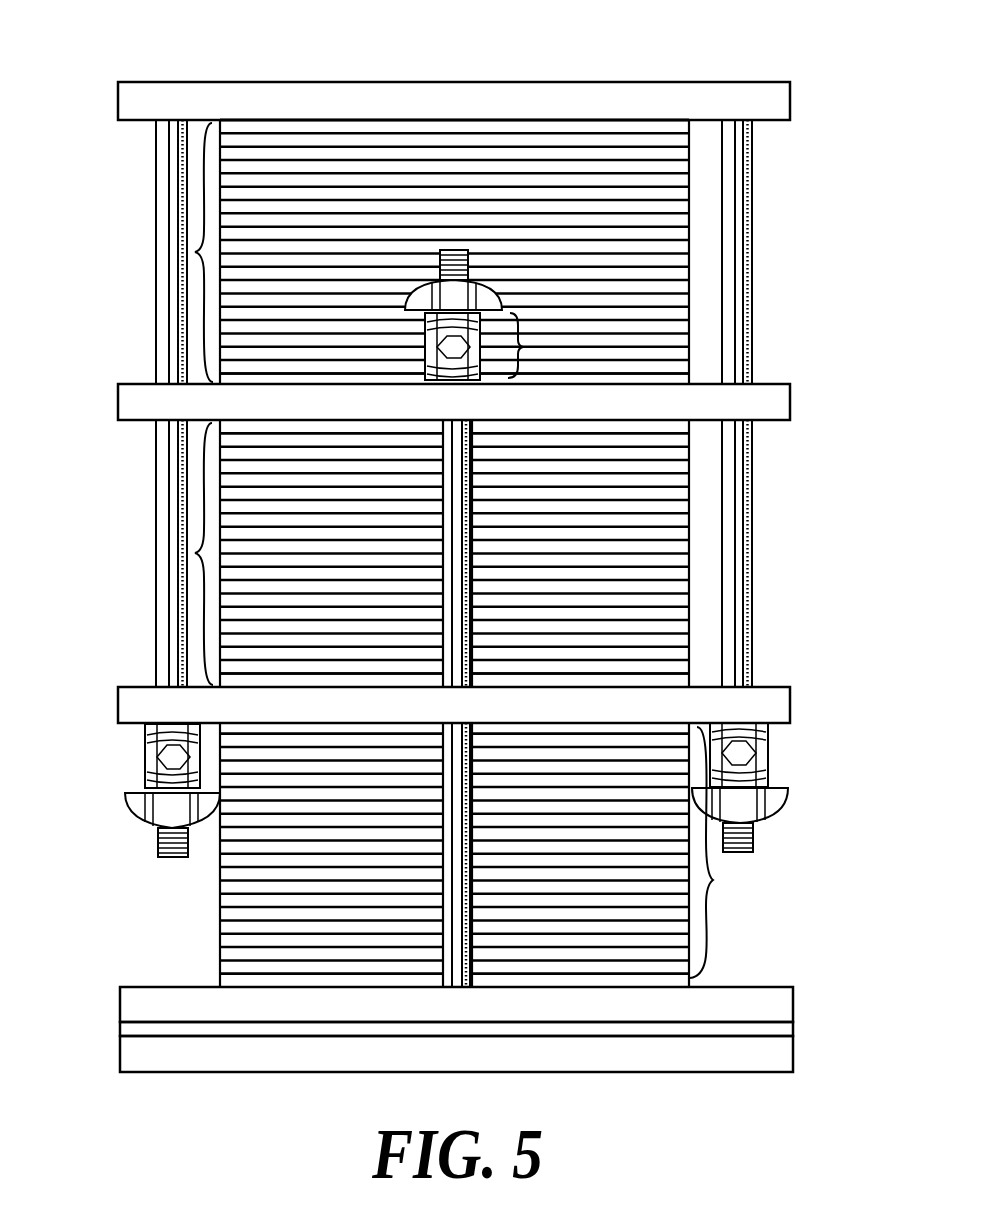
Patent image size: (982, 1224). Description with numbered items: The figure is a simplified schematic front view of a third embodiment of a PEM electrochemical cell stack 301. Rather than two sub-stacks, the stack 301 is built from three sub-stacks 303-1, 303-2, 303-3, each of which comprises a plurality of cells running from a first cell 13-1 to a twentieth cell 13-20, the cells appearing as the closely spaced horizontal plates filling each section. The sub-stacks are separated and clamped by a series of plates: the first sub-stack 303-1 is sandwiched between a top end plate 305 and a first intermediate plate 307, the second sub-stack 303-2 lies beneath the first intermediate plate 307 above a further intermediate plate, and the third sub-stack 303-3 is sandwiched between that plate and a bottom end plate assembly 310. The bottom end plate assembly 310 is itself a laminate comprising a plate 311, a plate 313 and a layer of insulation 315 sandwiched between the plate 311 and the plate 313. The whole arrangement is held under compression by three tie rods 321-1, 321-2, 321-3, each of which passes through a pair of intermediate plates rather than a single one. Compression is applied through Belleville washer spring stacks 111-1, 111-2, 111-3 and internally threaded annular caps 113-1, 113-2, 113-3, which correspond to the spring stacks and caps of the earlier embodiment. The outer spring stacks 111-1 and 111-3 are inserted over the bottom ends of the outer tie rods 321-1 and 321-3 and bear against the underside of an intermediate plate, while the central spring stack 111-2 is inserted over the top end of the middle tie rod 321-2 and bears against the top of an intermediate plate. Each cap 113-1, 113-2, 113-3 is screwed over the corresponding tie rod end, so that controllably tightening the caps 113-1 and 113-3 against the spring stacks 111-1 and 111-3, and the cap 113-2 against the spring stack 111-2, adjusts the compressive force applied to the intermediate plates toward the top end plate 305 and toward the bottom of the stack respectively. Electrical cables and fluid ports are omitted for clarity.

The PEM electrochemical cell stack 301 is at (176, 46).
The top end plate 305 is at (505, 95).
The first intermediate plate 307 is at (118, 398).
The cell 13-1 is at (660, 122).
The cell 13-20 is at (682, 375).
The sub-stack 303-1 is at (187, 252).
The sub-stack 303-2 is at (187, 553).
The sub-stack 303-3 is at (734, 852).
The tie rod 321-1 is at (165, 490).
The tie rod 321-2 is at (448, 890).
The tie rod 321-3 is at (745, 490).
The Belleville washer spring stack 111-1 is at (135, 725).
The Belleville washer spring stack 111-2 is at (530, 348).
The Belleville washer spring stack 111-3 is at (782, 724).
The annular cap 113-1 is at (137, 803).
The annular cap 113-2 is at (415, 292).
The annular cap 113-3 is at (775, 800).
The bottom end plate assembly 310 is at (425, 1028).
The plate 311 is at (160, 1000).
The plate 313 is at (443, 1078).
The layer of insulation 315 is at (280, 1028).